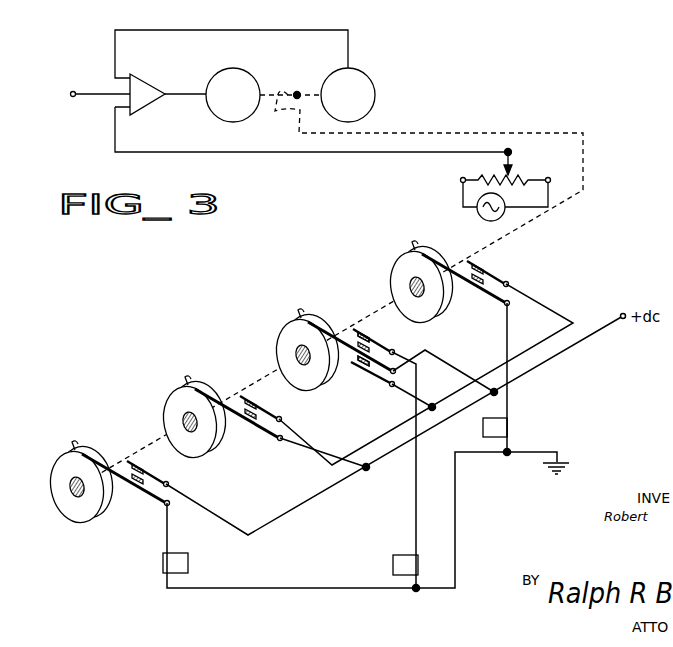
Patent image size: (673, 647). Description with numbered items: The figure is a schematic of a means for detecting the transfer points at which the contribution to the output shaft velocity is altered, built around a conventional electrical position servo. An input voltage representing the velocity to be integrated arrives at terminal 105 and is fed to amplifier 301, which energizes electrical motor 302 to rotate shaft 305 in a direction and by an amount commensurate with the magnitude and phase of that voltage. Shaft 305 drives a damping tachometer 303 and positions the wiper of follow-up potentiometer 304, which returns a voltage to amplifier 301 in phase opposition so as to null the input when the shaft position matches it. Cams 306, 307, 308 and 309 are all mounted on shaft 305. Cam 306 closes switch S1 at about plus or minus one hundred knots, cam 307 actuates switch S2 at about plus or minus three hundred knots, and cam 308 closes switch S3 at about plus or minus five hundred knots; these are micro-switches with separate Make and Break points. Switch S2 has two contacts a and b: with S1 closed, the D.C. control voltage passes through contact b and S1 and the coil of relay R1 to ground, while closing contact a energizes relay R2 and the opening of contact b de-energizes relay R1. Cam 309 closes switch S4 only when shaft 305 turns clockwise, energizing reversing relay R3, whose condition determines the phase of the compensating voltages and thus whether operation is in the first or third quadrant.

The terminal 105 is at (70, 93).
The amplifier 301 is at (148, 104).
The electrical motor 302 is at (214, 77).
The damping tachometer 303 is at (329, 77).
The follow-up potentiometer 304 is at (514, 174).
The shaft 305 is at (330, 289).
The cam 306 is at (397, 282).
The cam 307 is at (279, 358).
The cam 308 is at (165, 425).
The cam 309 is at (56, 503).
The switch S1 is at (497, 279).
The switch S2 is at (384, 347).
The switch S3 is at (270, 414).
The switch S4 is at (152, 476).
The switch contact a is at (352, 329).
The switch contact b is at (356, 360).
The relay R1 is at (508, 428).
The relay R2 is at (393, 567).
The reversing relay R3 is at (188, 563).